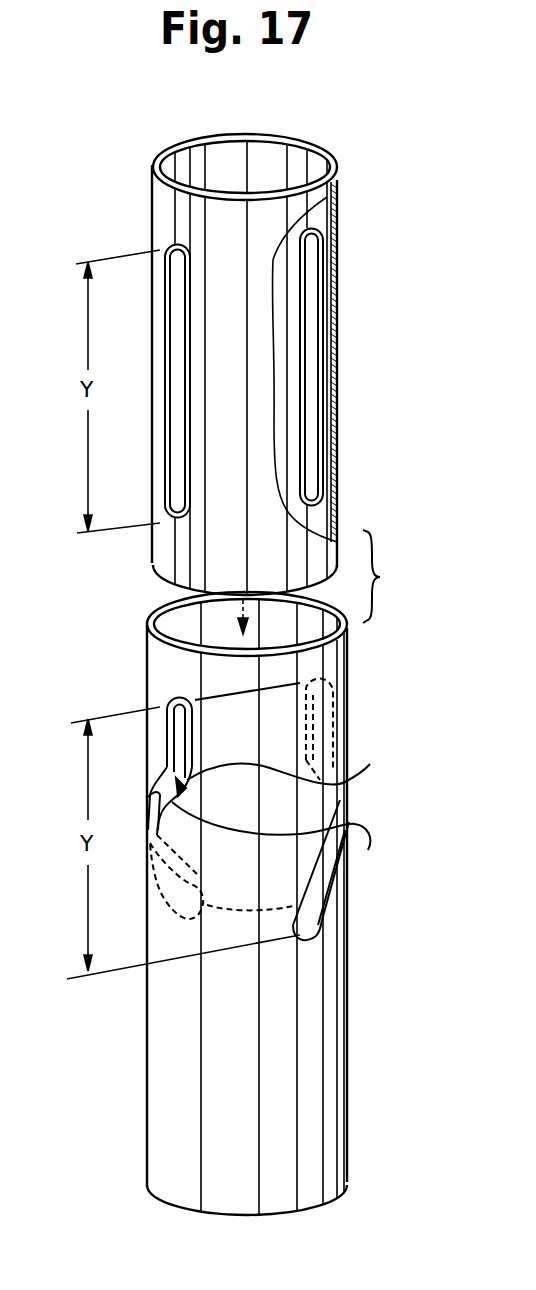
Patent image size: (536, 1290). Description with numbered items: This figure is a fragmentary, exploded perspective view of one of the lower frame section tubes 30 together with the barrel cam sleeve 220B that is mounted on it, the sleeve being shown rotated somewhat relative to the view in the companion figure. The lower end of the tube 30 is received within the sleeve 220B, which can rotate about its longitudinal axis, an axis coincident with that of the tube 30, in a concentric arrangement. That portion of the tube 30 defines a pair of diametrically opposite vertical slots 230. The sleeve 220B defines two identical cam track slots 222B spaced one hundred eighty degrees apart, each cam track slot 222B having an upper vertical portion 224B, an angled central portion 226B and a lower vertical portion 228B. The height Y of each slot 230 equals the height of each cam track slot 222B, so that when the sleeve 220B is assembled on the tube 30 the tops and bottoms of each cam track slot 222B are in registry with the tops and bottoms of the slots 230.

The lower frame section tube 30 is at (163, 195).
The vertical slot 230 is at (192, 345).
The barrel cam sleeve 220B is at (148, 1100).
The upper vertical portion 224B is at (186, 730).
The cam track slot 222B is at (298, 758).
The angled central portion 226B is at (318, 885).
The lower vertical portion 228B is at (296, 912).